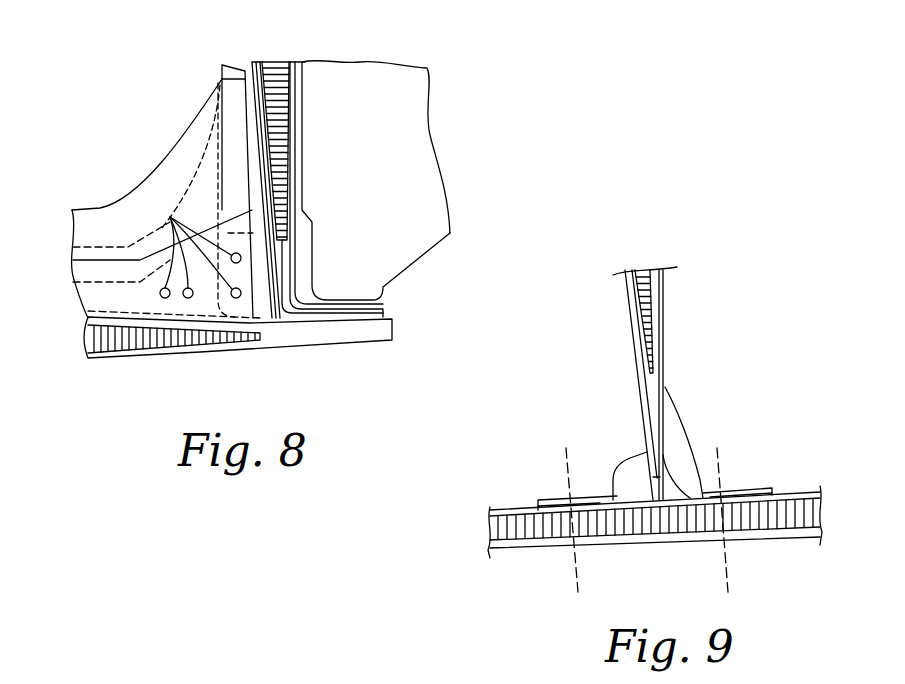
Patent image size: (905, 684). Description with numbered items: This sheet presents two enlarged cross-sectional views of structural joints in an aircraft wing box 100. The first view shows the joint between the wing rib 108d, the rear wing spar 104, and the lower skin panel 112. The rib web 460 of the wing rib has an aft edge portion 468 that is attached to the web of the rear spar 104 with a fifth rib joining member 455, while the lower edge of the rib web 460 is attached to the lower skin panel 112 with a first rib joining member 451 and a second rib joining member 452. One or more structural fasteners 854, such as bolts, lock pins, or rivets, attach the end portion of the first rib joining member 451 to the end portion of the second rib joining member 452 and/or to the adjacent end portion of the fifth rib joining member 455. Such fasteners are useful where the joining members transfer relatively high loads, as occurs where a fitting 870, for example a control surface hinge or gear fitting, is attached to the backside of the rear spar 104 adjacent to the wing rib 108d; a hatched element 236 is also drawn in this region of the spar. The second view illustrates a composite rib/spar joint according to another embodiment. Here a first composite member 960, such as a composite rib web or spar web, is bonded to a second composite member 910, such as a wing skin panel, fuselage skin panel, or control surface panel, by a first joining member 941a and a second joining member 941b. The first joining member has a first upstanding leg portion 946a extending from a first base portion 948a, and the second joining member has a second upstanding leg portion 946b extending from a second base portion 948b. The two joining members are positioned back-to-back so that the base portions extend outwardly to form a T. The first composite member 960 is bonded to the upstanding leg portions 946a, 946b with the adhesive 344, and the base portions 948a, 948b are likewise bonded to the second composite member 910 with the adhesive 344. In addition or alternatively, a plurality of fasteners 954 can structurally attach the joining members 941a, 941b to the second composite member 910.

In FIG. 8, the wing box 100 is at (463, 78).
In FIG. 8, the rear wing spar 104 is at (292, 143).
In FIG. 8, the wing rib 108d is at (193, 105).
In FIG. 8, the lower skin panel 112 is at (137, 357).
In FIG. 8, the fin stack 236 is at (267, 62).
In FIG. 8, the first rib joining member 451 is at (82, 272).
In FIG. 8, the second rib joining member 452 is at (100, 297).
In FIG. 8, the fifth rib joining member 455 is at (233, 72).
In FIG. 8, the rib web 460 is at (120, 221).
In FIG. 8, the aft edge portion 468 is at (233, 128).
In FIG. 8, the structural fasteners 854 is at (170, 217).
In FIG. 8, the fitting 870 is at (390, 75).
In FIG. 9, the adhesive 344 is at (648, 460).
In FIG. 9, the second composite member 910 is at (530, 550).
In FIG. 9, the first joining member 941a is at (548, 495).
In FIG. 9, the second joining member 941b is at (737, 488).
In FIG. 9, the first upstanding leg portion 946a is at (636, 393).
In FIG. 9, the second upstanding leg portion 946b is at (667, 385).
In FIG. 9, the first base portion 948a is at (533, 502).
In FIG. 9, the second base portion 948b is at (780, 490).
In FIG. 9, the fasteners 954 is at (720, 542).
In FIG. 9, the first composite member 960 is at (627, 312).